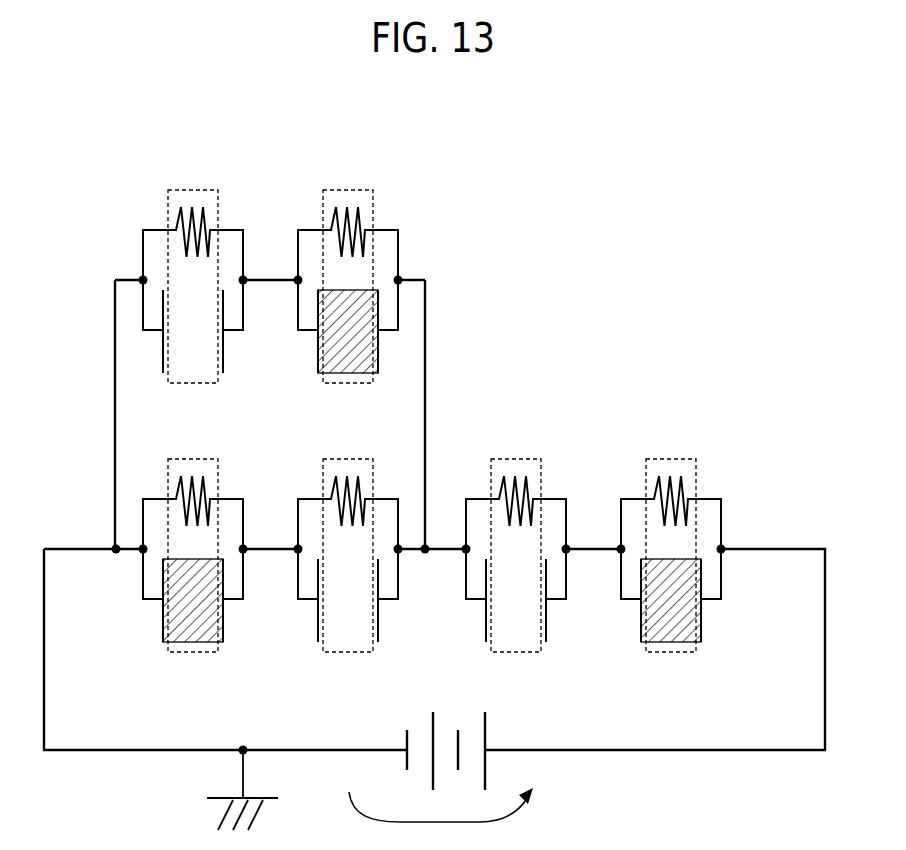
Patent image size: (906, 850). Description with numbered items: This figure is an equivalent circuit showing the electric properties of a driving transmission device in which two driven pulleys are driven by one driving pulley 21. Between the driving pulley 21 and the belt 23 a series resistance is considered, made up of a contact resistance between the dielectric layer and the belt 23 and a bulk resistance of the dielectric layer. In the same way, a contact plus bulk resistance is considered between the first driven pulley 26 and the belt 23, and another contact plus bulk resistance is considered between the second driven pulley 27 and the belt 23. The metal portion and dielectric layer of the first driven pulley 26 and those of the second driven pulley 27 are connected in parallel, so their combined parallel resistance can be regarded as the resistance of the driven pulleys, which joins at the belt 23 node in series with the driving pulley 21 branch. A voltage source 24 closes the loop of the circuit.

The driving pulley 21 is at (591, 475).
The belt 23 is at (447, 553).
The DC power supply 24 is at (488, 731).
The first driven pulley 26 is at (265, 475).
The second driven pulley 27 is at (265, 205).